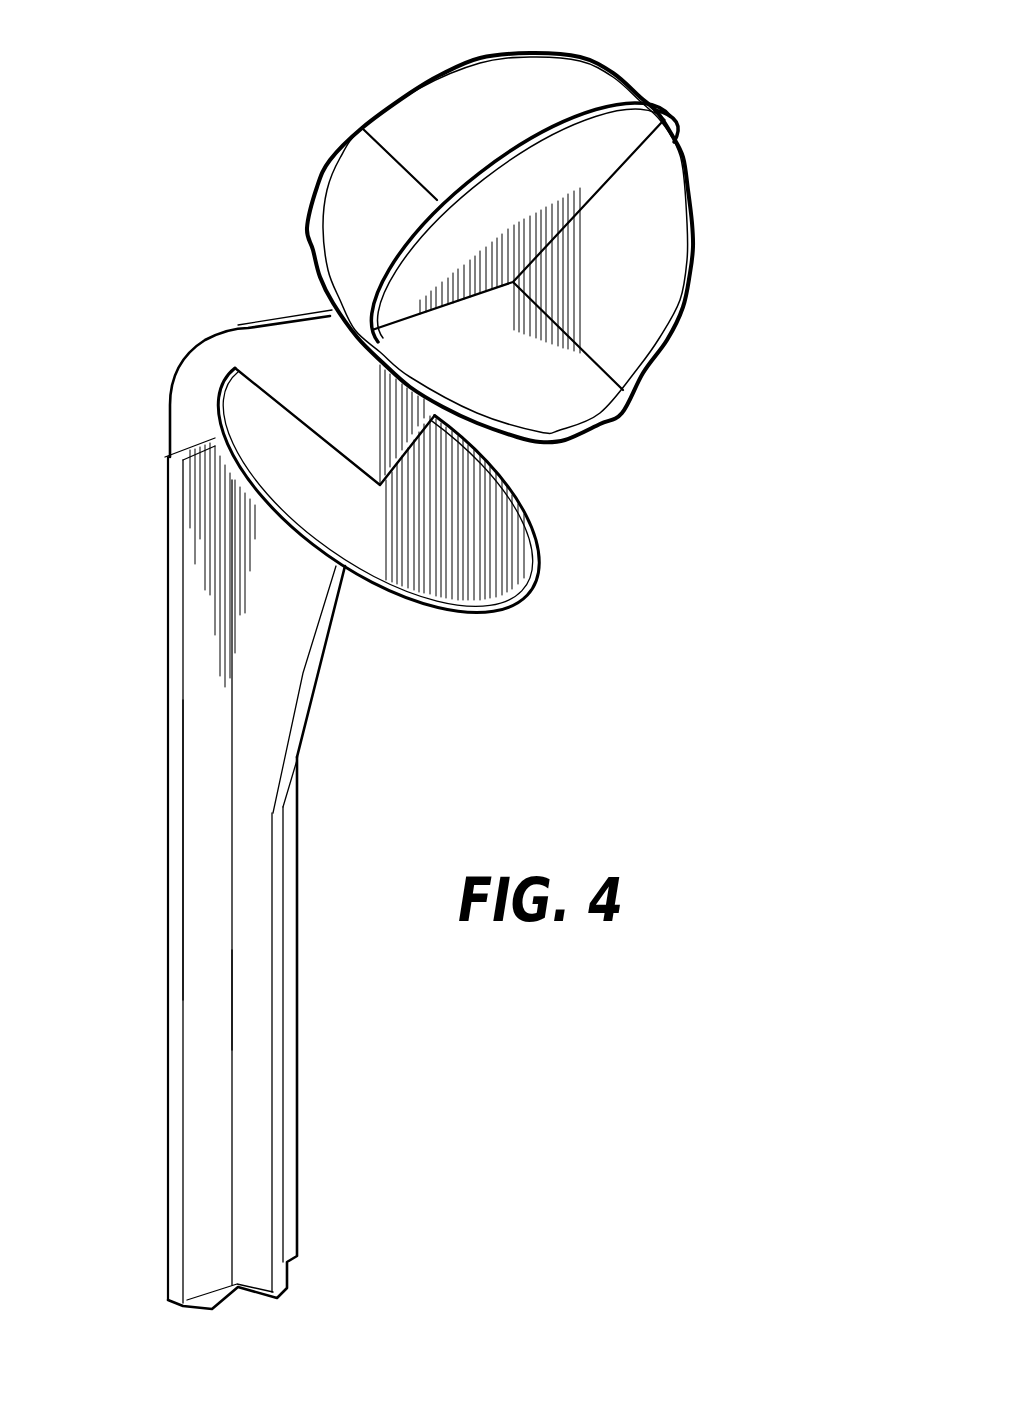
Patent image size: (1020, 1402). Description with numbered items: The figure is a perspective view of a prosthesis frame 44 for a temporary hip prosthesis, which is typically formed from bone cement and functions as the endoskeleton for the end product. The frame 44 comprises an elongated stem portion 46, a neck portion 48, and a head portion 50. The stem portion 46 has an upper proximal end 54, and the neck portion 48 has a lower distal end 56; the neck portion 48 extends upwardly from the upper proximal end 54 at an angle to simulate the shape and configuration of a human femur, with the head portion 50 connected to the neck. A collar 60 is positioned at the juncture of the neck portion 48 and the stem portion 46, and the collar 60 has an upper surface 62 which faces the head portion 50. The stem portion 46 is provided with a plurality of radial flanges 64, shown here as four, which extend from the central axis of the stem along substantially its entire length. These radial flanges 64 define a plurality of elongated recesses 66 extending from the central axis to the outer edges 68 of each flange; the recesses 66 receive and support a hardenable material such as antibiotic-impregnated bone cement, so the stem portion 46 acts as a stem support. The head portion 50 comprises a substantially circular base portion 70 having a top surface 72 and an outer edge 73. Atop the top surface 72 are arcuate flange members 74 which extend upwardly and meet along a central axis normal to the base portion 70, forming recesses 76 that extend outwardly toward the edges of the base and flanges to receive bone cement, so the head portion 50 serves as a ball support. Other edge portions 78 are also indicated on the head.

The prosthesis frame 44 is at (455, 752).
The elongated stem portion 46 is at (315, 1125).
The neck portion 48 is at (340, 399).
The head portion 50 is at (760, 88).
The upper proximal end 54 is at (177, 373).
The lower distal end 56 is at (237, 328).
The collar 60 is at (448, 620).
The upper surface 62 is at (492, 532).
The radial flanges 64 is at (168, 810).
The elongated recesses 66 is at (247, 985).
The outer edges 68 is at (278, 948).
The circular base portion 70 is at (622, 415).
The top surface 72 is at (333, 202).
The outer edge 73 is at (328, 163).
The arcuate flange members 74 is at (405, 108).
The recesses 76 is at (548, 92).
The rim portion 78 is at (487, 163).